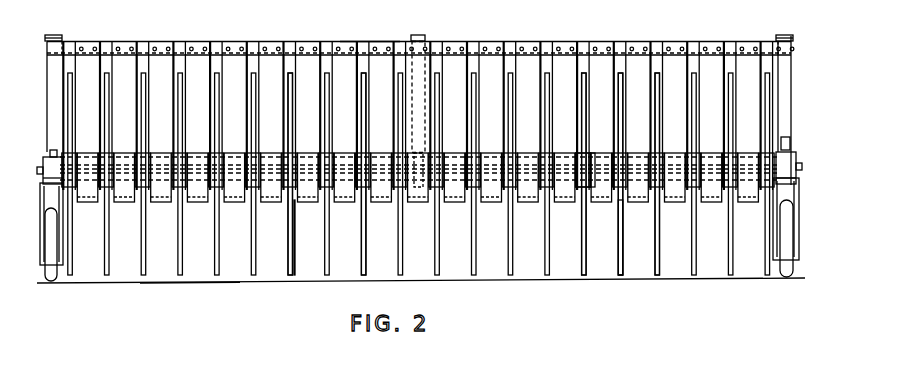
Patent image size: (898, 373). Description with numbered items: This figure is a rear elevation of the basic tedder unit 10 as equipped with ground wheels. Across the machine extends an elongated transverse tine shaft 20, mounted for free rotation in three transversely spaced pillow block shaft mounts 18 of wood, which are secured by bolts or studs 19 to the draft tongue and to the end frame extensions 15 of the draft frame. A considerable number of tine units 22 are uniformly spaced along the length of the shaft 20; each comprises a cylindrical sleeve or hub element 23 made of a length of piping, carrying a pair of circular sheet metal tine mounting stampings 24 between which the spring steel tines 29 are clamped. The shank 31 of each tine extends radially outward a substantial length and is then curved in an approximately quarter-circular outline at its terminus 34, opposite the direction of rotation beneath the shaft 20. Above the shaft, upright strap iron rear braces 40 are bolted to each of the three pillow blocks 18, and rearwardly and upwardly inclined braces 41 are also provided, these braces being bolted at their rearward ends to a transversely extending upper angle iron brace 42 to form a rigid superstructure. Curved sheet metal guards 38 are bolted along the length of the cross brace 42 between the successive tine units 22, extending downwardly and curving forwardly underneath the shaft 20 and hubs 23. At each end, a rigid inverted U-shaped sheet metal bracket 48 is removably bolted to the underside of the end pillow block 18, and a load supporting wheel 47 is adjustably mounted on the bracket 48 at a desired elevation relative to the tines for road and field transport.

The tedder unit 10 is at (225, 290).
The extensions 15 is at (790, 140).
The pillow block shaft mount 18 is at (45, 165).
The bolts or studs 19 is at (52, 150).
The tine shaft 20 is at (272, 188).
The tine unit 22 is at (358, 228).
The hub element 23 is at (587, 195).
The tine mounting stampings 24 is at (577, 195).
The tines 29 is at (289, 250).
The shank 31 is at (579, 228).
The terminus 34 is at (294, 255).
The guards 38 is at (165, 195).
The rear braces 40 is at (52, 70).
The inclined braces 41 is at (58, 30).
The upper angle iron brace 42 is at (362, 50).
The wheels 47 is at (52, 275).
The bracket 48 is at (42, 235).